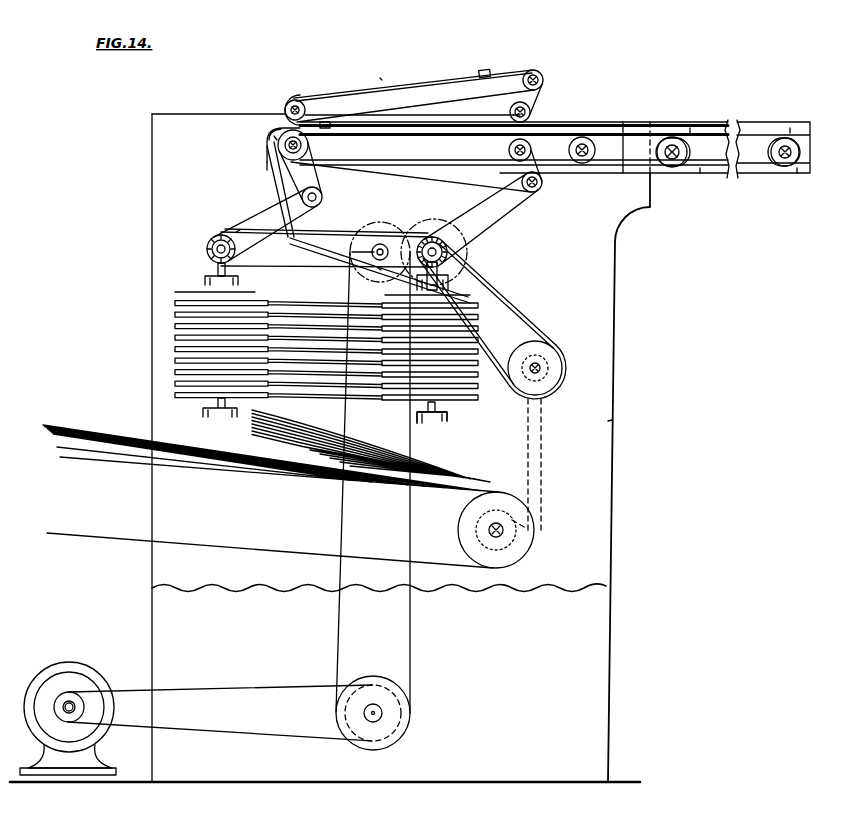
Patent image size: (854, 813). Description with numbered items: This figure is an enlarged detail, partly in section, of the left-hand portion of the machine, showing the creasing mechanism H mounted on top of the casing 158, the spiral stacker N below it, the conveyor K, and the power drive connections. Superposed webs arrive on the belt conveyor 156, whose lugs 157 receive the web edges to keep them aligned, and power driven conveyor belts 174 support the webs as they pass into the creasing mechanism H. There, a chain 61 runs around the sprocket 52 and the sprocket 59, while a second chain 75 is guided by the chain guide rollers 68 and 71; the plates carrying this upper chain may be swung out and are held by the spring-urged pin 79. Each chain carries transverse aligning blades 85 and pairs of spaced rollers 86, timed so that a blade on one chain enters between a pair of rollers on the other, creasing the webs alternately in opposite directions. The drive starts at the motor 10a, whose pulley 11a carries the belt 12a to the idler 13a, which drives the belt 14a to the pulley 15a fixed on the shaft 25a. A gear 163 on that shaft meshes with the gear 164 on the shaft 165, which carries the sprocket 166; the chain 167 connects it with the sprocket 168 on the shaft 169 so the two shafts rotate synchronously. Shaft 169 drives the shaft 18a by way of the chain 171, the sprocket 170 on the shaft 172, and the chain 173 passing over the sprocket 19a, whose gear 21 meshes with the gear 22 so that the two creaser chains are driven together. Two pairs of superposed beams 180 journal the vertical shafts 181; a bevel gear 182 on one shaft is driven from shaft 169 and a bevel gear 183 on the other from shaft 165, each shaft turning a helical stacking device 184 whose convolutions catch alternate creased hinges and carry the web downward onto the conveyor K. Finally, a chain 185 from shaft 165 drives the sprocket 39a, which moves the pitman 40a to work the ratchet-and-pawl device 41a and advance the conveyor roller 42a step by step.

The motor 10a is at (76, 672).
The pulley 11a is at (62, 712).
The belt 12a is at (212, 688).
The idler 13a is at (408, 722).
The belt 14a is at (412, 656).
The pulley 15a is at (378, 230).
The shaft 18a is at (273, 150).
The sprocket 19a is at (270, 158).
The gear 21 is at (275, 136).
The gear 22 is at (282, 100).
The shaft 25a is at (352, 252).
The sprocket 39a is at (565, 368).
The pitman 40a is at (545, 464).
The ratchet-and-pawl device 41a is at (541, 530).
The conveyor roller 42a is at (508, 562).
The sprocket wheel 52 is at (309, 145).
The sprocket 59 is at (541, 190).
The chain 61 is at (433, 180).
The chain guide roller 68 is at (510, 112).
The chain guide roller 71 is at (545, 85).
The chain 75 is at (432, 86).
The pin 79 is at (290, 100).
The aligning blade 85 is at (330, 86).
The roller 86 is at (490, 68).
The web hinge aligning and creasing mechanism H is at (383, 78).
The conveyor K is at (268, 491).
The spiral stacker N is at (143, 326).
The belt conveyor 156 is at (748, 176).
The lug 157 is at (775, 132).
The casing 158 is at (613, 420).
The gear 163 is at (378, 270).
The gear 164 is at (468, 252).
The shaft 165 is at (436, 236).
The sprocket 166 is at (440, 276).
The chain 167 is at (346, 222).
The sprocket 168 is at (208, 250).
The shaft 169 is at (238, 256).
The sprocket 170 is at (322, 192).
The chain 171 is at (242, 232).
The shaft 172 is at (280, 204).
The chain 173 is at (284, 180).
The conveyor belt 174 is at (588, 168).
The beam 180 is at (204, 412).
The vertical shaft 181 is at (216, 270).
The bevel gear 182 is at (216, 272).
The bevel gear 183 is at (464, 302).
The stacking device 184 is at (175, 360).
The chain 185 is at (538, 330).